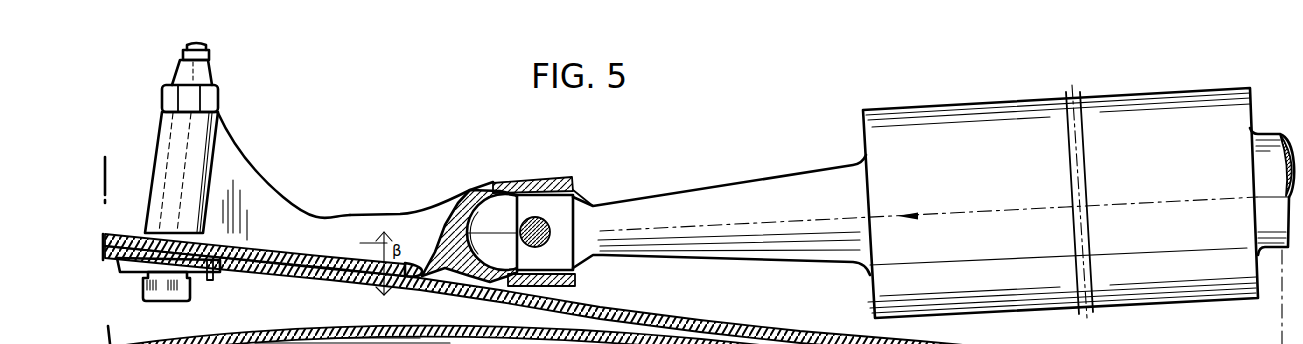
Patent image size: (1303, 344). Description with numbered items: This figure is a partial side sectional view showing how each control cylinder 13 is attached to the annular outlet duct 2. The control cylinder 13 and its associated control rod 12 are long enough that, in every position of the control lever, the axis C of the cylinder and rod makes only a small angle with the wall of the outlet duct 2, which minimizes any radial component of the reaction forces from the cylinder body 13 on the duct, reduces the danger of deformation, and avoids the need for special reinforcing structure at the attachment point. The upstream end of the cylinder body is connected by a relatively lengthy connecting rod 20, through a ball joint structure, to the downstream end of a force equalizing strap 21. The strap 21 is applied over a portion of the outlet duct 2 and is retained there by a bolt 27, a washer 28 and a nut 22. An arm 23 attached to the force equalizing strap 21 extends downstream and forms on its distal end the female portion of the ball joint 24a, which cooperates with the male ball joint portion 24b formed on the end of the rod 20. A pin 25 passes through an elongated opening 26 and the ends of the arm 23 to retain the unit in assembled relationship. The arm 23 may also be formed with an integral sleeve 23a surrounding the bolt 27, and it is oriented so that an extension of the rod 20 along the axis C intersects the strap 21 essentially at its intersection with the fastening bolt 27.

The annular outlet duct 2 is at (243, 268).
The control rod 12 is at (1267, 153).
The control cylinder 13 is at (903, 132).
The connecting rod 20 is at (703, 243).
The force equalizing strap 21 is at (262, 238).
The nut 22 is at (190, 98).
The arm 23 is at (345, 228).
The integral sleeve 23a is at (218, 148).
The female portion of ball joint 24a is at (493, 183).
The male ball joint portion 24b is at (500, 222).
The pin 25 is at (550, 230).
The elongated opening 26 is at (460, 236).
The bolt 27 is at (188, 293).
The washer 28 is at (126, 273).
The axis of the control cylinder and rod C is at (760, 222).